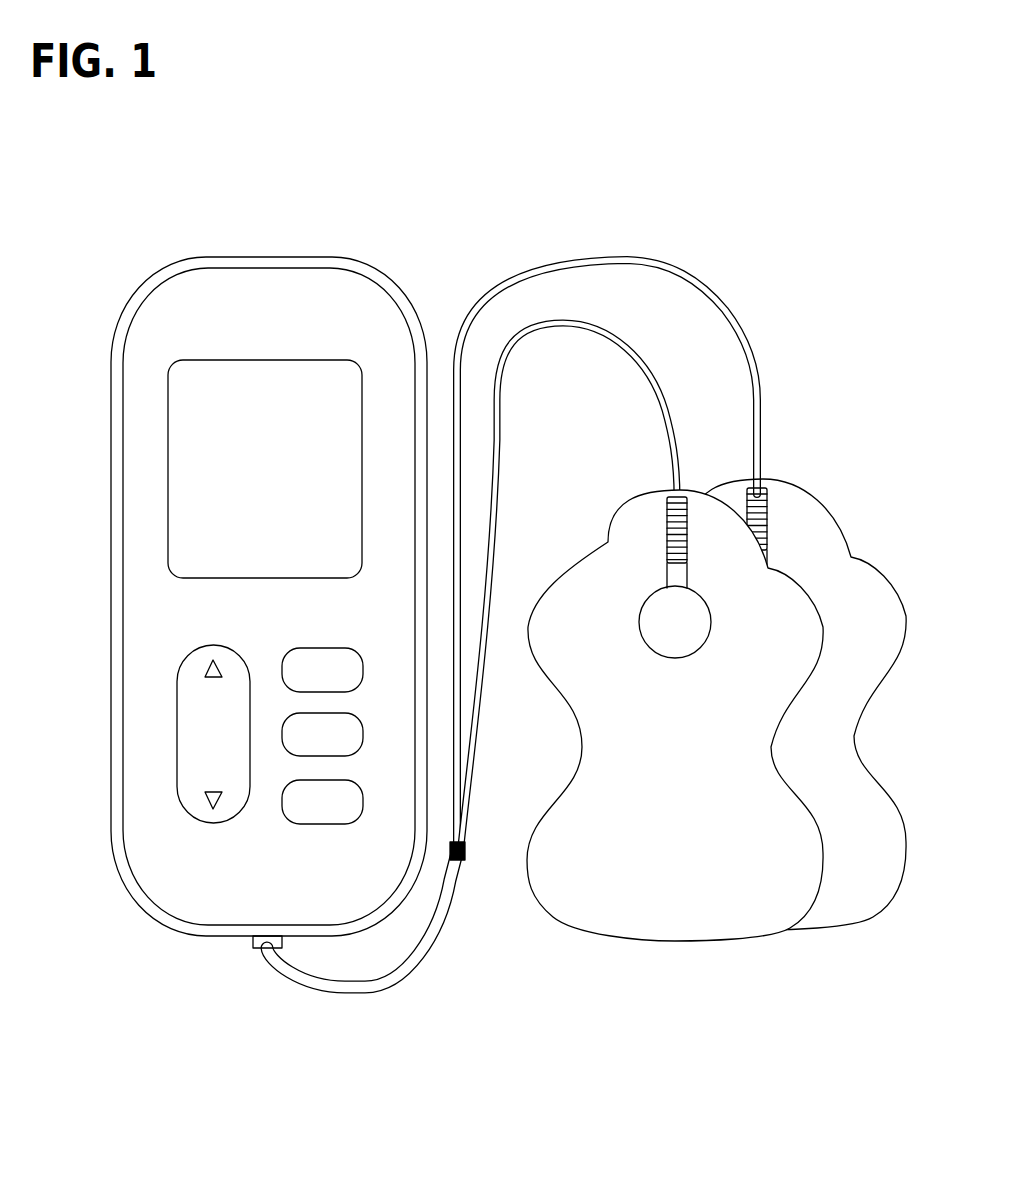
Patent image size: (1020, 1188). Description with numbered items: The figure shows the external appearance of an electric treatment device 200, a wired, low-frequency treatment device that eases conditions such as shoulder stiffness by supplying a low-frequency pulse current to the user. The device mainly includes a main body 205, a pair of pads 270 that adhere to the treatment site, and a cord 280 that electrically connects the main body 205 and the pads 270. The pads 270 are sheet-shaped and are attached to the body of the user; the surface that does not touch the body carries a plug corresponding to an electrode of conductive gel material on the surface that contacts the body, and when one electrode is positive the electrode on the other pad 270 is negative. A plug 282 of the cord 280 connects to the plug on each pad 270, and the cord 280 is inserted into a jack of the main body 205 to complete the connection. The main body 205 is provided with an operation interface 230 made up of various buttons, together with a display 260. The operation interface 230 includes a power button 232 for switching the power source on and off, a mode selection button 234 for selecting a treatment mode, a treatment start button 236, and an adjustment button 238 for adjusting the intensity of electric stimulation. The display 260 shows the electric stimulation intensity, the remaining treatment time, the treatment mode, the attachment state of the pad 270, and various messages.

The electric treatment device 200 is at (473, 199).
The main body 205 is at (293, 258).
The display 260 is at (295, 360).
The operation interface 230 is at (290, 747).
The power button 232 is at (340, 648).
The mode selection button 234 is at (340, 713).
The treatment start button 236 is at (342, 790).
The adjustment button 238 is at (216, 645).
The pads 270 is at (740, 939).
The cord 280 is at (358, 992).
The plug 282 is at (677, 660).